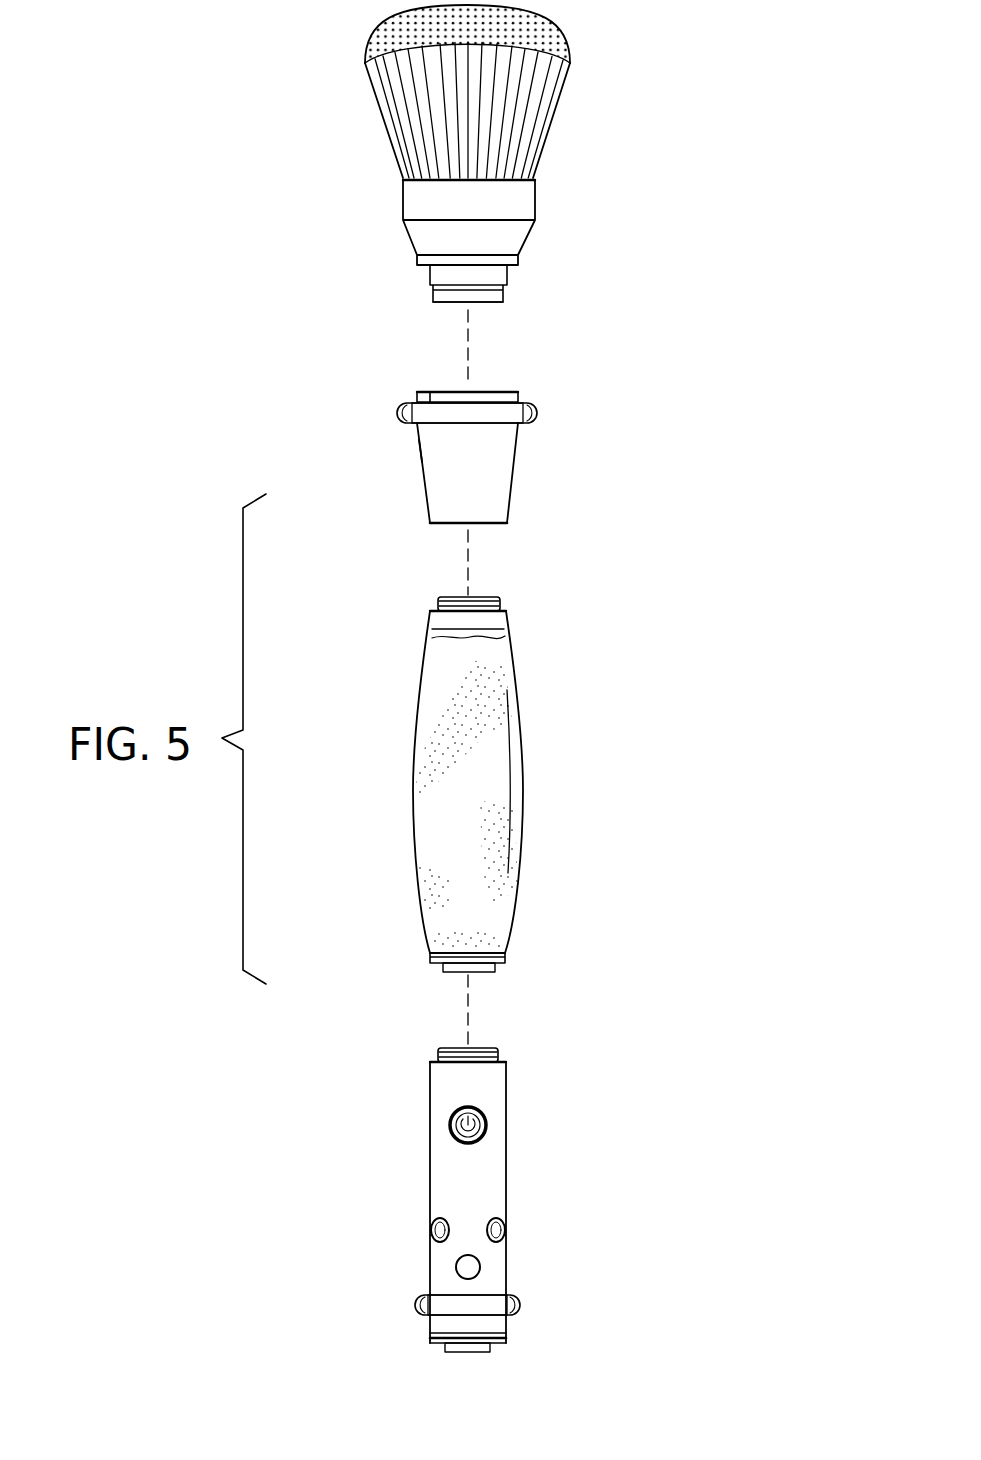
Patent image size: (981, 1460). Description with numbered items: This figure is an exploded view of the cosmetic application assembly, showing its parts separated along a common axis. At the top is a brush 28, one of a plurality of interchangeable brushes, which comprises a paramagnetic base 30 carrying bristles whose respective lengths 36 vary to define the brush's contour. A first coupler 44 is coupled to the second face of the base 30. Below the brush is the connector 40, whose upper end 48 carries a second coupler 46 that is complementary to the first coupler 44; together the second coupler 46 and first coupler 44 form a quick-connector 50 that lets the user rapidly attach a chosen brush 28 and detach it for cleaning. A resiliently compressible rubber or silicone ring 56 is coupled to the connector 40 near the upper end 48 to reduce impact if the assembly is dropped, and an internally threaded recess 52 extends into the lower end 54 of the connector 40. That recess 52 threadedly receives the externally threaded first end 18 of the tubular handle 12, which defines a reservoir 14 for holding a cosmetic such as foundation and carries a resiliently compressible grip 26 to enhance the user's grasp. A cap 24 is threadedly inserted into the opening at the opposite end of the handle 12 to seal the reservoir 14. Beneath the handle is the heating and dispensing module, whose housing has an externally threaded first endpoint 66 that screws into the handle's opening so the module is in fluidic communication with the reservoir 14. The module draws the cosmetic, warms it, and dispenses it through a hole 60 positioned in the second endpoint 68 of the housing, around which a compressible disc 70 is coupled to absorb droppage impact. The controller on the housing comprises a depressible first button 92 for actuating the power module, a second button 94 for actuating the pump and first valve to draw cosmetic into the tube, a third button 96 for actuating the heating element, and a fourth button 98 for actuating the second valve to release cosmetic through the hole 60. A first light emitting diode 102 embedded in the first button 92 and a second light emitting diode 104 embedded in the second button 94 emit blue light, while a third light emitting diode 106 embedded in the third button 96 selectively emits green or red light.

The handle 12 is at (520, 848).
The reservoir 14 is at (480, 738).
The first end 18 is at (492, 597).
The cap 24 is at (477, 963).
The grip 26 is at (480, 792).
The brush 28 is at (388, 118).
The base 30 is at (515, 203).
The length 36 is at (528, 108).
The connector 40 is at (513, 460).
The first coupler 44 is at (495, 278).
The second coupler 46 is at (490, 392).
The upper end 48 is at (423, 340).
The quick-connector 50 is at (448, 302).
The recess 52 is at (473, 512).
The lower end 54 is at (443, 525).
The ring 56 is at (537, 415).
The hole 60 is at (463, 1348).
The first endpoint 66 is at (487, 1048).
The second endpoint 68 is at (498, 1347).
The disc 70 is at (520, 1303).
The first button 92 is at (485, 1118).
The second button 94 is at (432, 1227).
The third button 96 is at (502, 1228).
The fourth button 98 is at (455, 1267).
The first light emitting diode 102 is at (482, 1132).
The second light emitting diode 104 is at (434, 1240).
The third light emitting diode 106 is at (498, 1238).